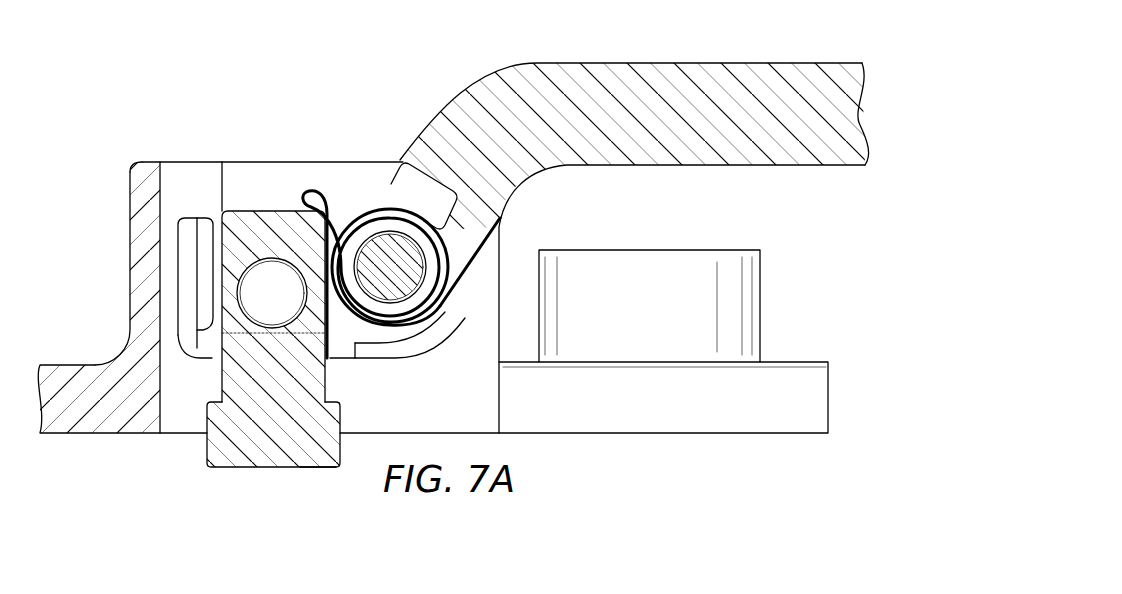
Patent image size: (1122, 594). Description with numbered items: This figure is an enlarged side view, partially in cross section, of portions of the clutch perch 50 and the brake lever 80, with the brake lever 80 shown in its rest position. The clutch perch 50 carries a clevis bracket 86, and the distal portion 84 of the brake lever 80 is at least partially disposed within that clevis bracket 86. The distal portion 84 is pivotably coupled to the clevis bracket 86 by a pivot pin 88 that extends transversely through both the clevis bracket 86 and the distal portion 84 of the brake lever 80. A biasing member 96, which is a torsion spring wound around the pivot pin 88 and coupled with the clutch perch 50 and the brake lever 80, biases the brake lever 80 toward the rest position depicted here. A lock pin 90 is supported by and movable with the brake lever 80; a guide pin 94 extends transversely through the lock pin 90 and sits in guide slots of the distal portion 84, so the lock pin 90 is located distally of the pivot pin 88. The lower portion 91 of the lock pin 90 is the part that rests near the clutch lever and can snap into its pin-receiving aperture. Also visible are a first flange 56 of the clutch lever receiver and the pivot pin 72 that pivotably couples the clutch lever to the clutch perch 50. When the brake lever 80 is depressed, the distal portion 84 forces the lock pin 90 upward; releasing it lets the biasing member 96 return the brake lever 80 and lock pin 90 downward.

The clutch perch 50 is at (82, 434).
The first flange 56 is at (831, 395).
The pivot pin 72 is at (763, 302).
The brake lever 80 is at (791, 62).
The distal portion 84 is at (408, 352).
The clevis bracket 86 is at (129, 228).
The pivot pin 88 is at (396, 237).
The lock pin 90 is at (237, 469).
The lower portion 91 is at (302, 469).
The guide pin 94 is at (268, 281).
The biasing member 96 is at (447, 294).